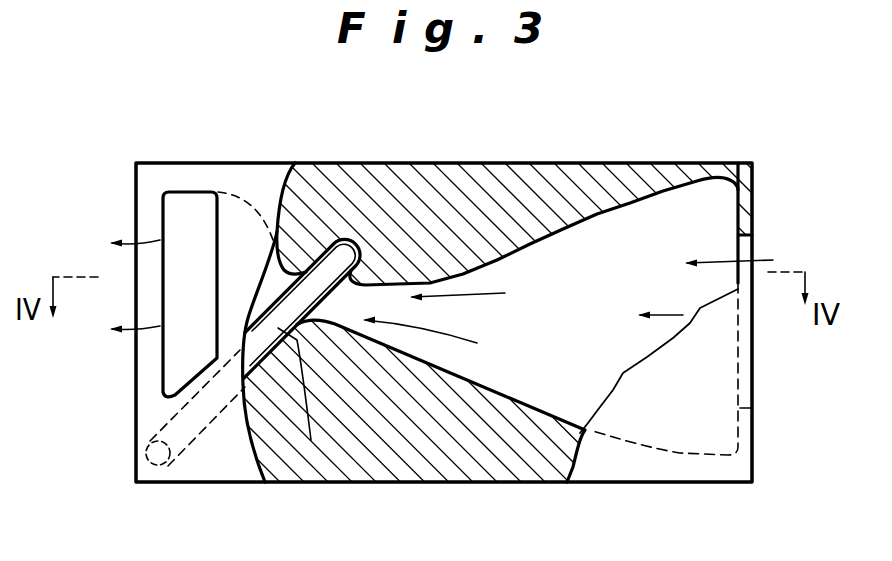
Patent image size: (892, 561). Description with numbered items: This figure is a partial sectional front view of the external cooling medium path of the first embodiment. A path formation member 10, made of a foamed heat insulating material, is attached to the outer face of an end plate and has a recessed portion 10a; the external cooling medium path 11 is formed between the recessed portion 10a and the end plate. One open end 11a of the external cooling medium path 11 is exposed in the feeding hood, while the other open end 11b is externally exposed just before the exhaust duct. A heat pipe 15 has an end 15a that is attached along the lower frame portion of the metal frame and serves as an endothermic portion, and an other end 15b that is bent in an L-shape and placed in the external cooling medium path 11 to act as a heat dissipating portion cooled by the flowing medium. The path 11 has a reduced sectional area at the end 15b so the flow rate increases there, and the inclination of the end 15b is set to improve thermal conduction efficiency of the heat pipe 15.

The path formation member 10 is at (427, 178).
The recessed portion 10a is at (534, 417).
The external cooling medium path 11 is at (592, 303).
The open end 11a is at (745, 251).
The other open end 11b is at (163, 217).
The heat pipe 15 is at (194, 444).
The end of heat pipe 15a is at (146, 457).
The other end of heat pipe 15b is at (311, 440).